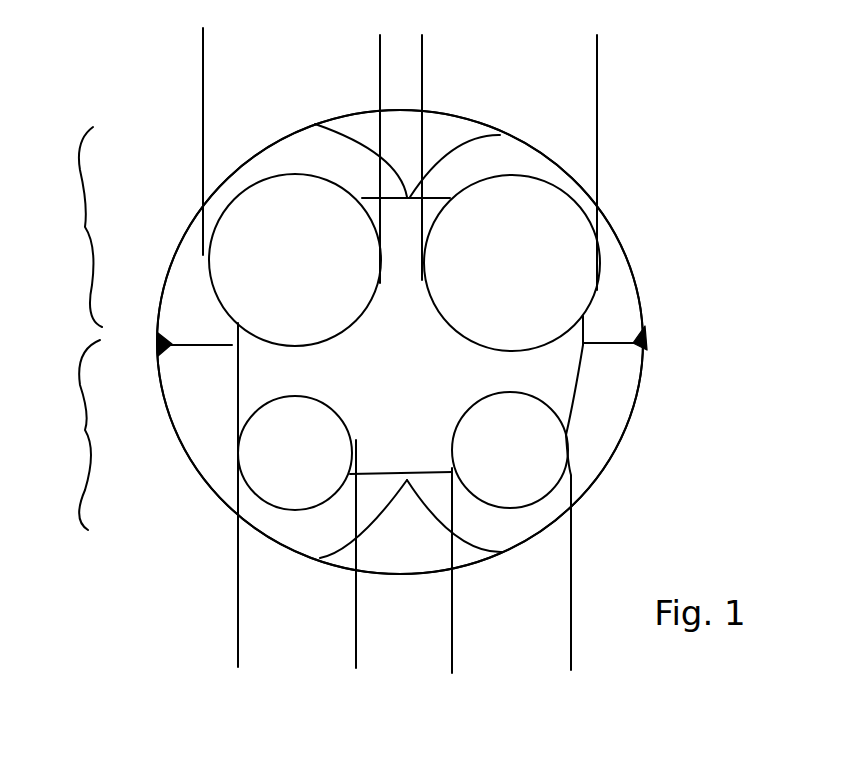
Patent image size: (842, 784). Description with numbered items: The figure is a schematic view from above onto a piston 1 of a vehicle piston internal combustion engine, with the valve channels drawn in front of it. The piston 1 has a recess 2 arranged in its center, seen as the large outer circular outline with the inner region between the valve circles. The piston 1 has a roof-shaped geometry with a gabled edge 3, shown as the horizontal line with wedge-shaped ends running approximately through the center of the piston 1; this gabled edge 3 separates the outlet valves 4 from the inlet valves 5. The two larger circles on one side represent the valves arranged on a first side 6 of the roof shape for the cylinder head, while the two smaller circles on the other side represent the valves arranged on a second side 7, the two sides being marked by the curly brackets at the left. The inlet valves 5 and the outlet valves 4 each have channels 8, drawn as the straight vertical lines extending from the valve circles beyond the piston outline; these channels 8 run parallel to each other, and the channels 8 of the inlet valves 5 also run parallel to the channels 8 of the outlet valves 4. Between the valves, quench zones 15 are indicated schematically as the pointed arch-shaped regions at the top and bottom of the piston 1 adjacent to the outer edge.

The piston 1 is at (660, 232).
The recess 2 is at (558, 384).
The gabled edge 3 is at (615, 343).
The outlet valves 4 is at (228, 262).
The inlet valves 5 is at (267, 473).
The first side 6 is at (59, 227).
The second side 7 is at (63, 435).
The channels 8 is at (258, 80).
The quench zones 15 is at (443, 127).